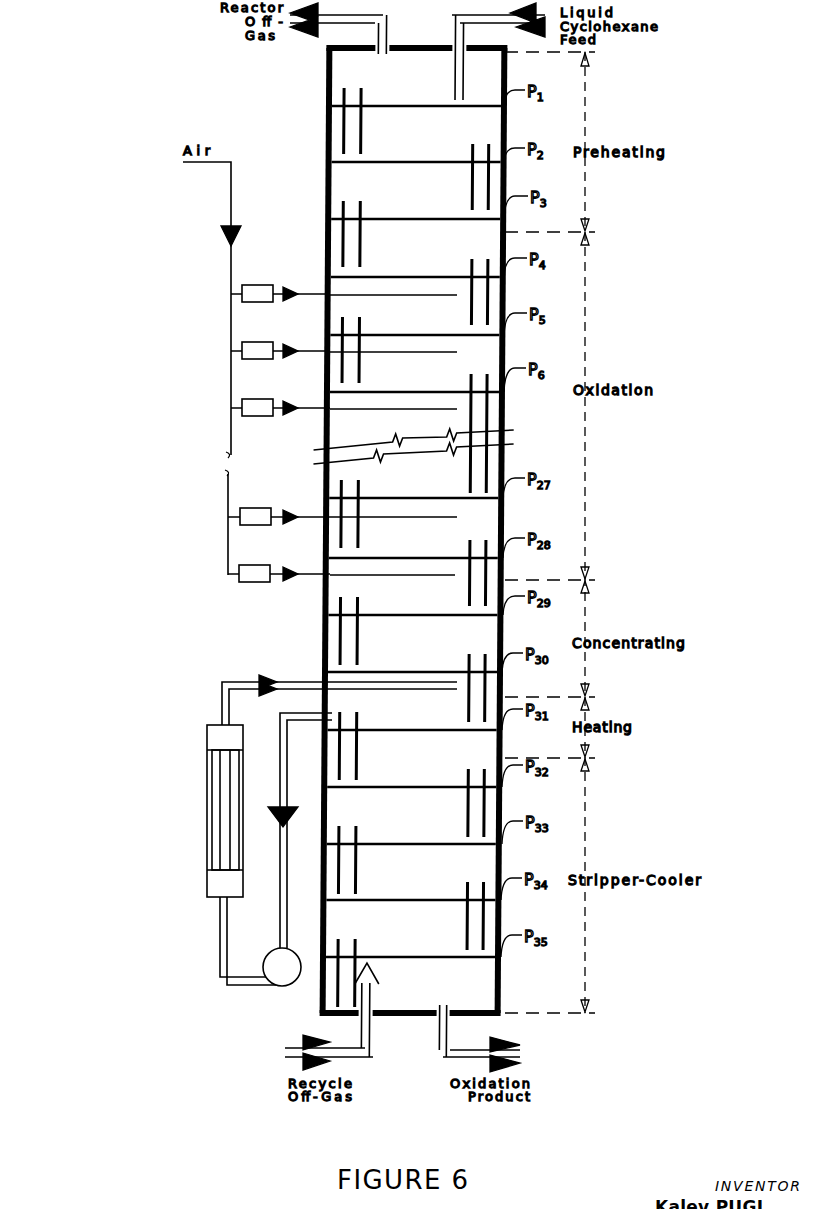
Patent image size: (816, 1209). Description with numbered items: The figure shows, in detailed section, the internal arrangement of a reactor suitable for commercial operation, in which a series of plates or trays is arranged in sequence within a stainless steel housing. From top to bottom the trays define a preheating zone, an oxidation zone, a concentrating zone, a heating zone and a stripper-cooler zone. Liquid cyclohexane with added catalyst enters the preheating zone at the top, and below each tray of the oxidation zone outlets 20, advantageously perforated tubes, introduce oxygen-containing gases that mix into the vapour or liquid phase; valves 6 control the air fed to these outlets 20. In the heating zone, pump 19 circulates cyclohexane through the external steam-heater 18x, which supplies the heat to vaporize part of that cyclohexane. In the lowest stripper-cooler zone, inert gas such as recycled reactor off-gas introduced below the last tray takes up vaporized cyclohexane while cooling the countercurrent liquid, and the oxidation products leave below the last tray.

The air inlet valves 6 is at (248, 404).
The external steam-heater 18x is at (207, 856).
The pump 19 is at (283, 970).
The outlets 20 is at (424, 300).